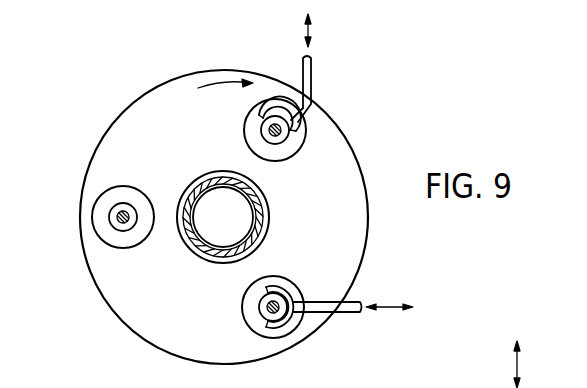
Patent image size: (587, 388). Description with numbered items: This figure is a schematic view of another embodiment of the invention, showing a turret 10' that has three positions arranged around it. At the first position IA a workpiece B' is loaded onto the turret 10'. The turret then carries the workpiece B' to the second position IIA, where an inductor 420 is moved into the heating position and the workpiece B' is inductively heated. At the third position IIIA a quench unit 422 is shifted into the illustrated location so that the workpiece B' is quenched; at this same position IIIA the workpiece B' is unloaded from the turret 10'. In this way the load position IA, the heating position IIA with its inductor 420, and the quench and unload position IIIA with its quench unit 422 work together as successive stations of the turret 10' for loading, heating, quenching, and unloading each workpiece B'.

The turret 10' is at (224, 200).
The inductor 420 is at (271, 110).
The quench unit 422 is at (291, 291).
The workpiece B' is at (221, 219).
The load position IA is at (77, 224).
The heating position IIA is at (340, 120).
The quench and unload position IIIA is at (361, 329).